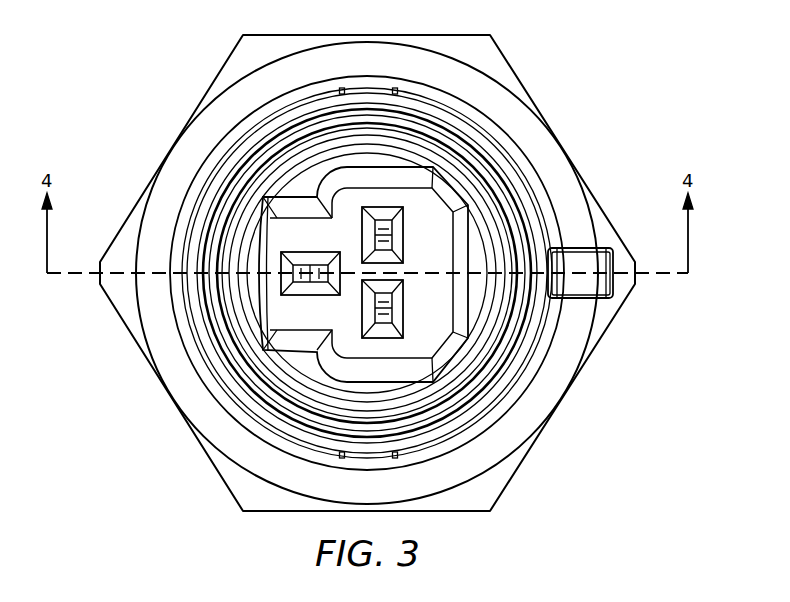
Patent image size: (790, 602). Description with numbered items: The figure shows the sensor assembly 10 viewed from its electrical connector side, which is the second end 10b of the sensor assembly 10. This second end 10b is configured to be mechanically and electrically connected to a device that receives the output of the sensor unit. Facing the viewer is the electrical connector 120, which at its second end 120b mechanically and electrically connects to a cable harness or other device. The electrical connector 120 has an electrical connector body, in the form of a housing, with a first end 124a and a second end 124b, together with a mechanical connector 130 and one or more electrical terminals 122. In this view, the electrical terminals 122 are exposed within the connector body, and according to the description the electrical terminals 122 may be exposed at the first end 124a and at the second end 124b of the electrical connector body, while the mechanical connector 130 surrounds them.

The sensor assembly 10 is at (137, 133).
The second end of the sensor assembly 10b is at (571, 310).
The electrical connector 120 is at (567, 222).
The second end of the electrical connector 120b is at (485, 153).
The electrical terminals 122 is at (312, 275).
The first end of the electrical connector body 124a is at (482, 427).
The second end of the electrical connector body 124b is at (508, 305).
The mechanical connector 130 is at (263, 243).